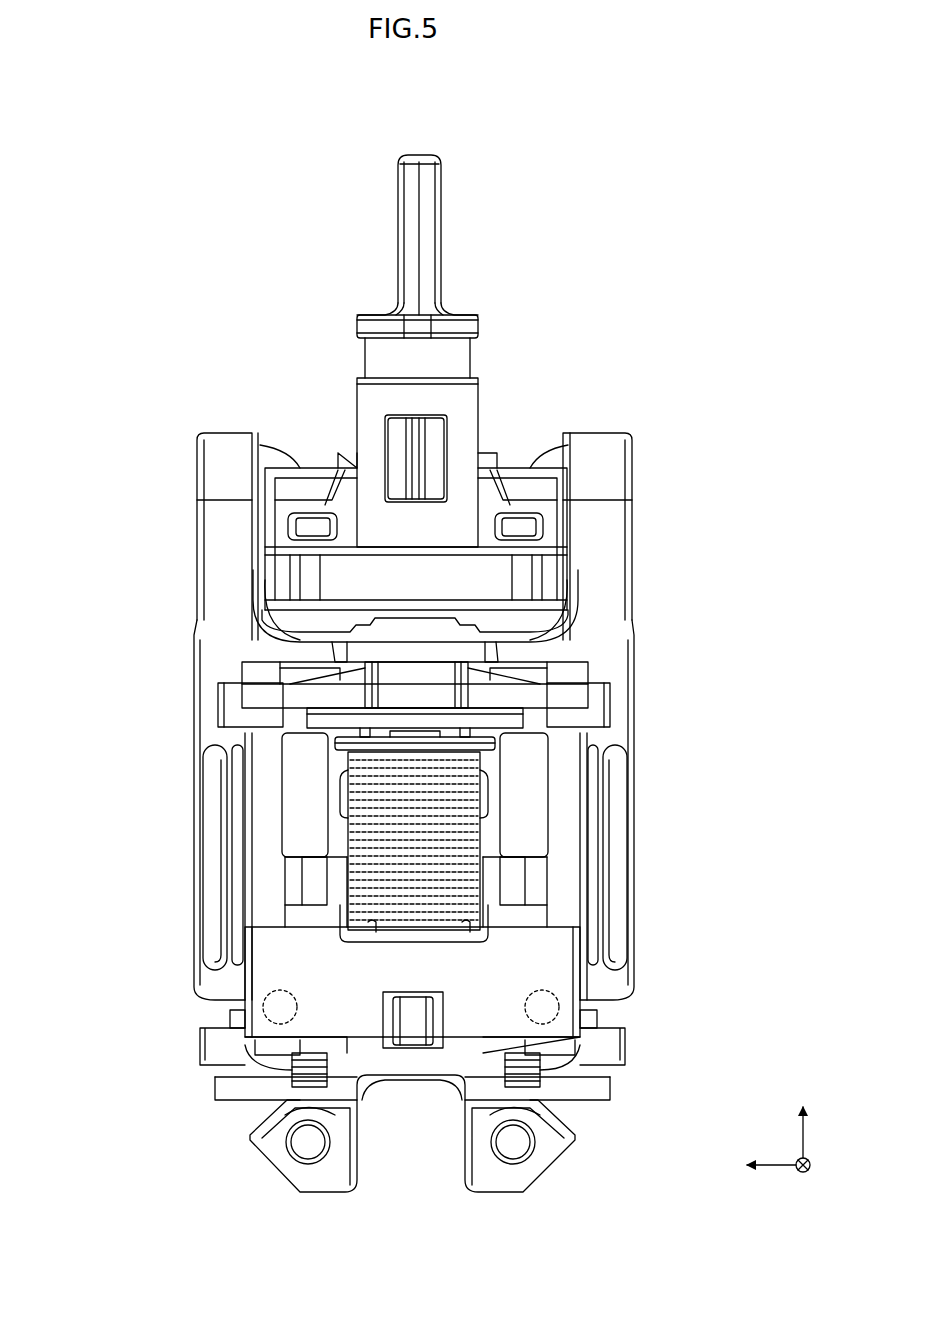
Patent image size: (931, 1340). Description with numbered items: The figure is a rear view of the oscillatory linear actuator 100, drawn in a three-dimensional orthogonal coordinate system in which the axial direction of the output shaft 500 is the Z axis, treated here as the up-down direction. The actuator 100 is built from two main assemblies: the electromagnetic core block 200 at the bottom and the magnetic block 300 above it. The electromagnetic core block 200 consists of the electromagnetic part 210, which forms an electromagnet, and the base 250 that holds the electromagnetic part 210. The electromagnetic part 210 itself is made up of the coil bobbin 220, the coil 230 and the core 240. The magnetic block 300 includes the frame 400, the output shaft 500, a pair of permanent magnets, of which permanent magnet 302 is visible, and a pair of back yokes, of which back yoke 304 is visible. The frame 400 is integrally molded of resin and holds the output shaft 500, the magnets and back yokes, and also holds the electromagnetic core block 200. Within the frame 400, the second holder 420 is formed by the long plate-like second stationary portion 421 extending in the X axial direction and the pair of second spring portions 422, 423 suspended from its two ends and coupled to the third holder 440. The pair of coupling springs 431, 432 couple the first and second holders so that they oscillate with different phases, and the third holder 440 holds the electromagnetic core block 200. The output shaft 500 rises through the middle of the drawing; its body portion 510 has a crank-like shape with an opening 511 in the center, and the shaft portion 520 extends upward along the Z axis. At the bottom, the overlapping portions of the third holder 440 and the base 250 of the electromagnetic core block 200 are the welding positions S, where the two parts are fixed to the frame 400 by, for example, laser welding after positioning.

The oscillatory linear actuator 100 is at (228, 105).
The electromagnetic core block 200 is at (615, 1165).
The electromagnetic part 210 is at (90, 765).
The coil bobbin 220 is at (328, 750).
The coil 230 is at (355, 785).
The core 240 is at (305, 825).
The base 250 is at (600, 1047).
The magnetic block 300 is at (272, 305).
The permanent magnet 302 is at (330, 715).
The back yoke 304 is at (320, 690).
The frame 400 is at (708, 552).
The second holder 420 is at (655, 840).
The second stationary portion 421 is at (595, 700).
The second spring portion 422 is at (633, 772).
The second spring portion 423 is at (193, 912).
The coupling spring 431 is at (605, 450).
The coupling spring 432 is at (222, 450).
The third holder 440 is at (258, 962).
The output shaft 500 is at (508, 365).
The body portion 510 is at (342, 573).
The opening 511 is at (350, 622).
The shaft portion 520 is at (415, 207).
The welding position S is at (228, 1020).